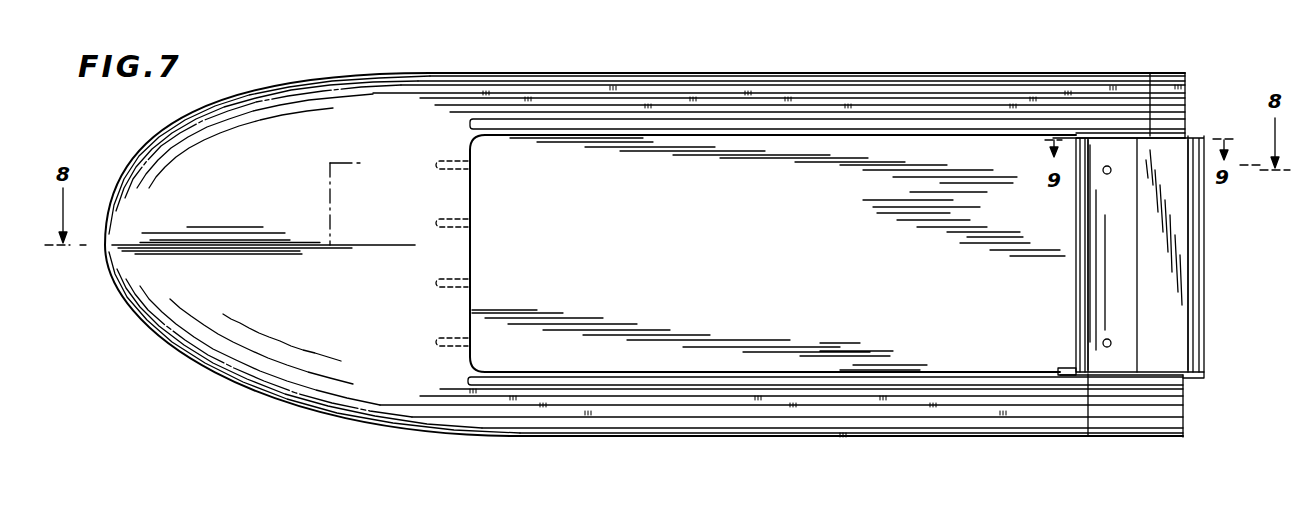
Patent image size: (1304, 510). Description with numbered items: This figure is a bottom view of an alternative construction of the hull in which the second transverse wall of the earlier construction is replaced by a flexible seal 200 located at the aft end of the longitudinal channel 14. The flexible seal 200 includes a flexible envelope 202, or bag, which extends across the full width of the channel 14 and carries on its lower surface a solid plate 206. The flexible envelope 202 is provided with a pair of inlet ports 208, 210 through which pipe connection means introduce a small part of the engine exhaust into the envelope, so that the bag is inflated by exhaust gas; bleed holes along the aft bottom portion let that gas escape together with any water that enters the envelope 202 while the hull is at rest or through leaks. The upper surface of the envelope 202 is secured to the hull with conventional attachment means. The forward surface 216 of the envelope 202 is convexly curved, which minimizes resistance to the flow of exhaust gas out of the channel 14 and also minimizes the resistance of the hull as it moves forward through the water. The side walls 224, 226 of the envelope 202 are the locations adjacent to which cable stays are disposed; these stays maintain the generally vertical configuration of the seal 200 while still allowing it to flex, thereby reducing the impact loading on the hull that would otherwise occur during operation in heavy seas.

The channel 14 is at (853, 147).
The flexible seal 200 is at (1208, 268).
The flexible envelope 202 is at (1204, 366).
The solid plate 206 is at (1178, 330).
The inlet port 208 is at (1110, 174).
The inlet port 210 is at (1098, 347).
The forward surface 216 is at (1090, 273).
The side wall 224 is at (1088, 374).
The side wall 226 is at (1150, 137).